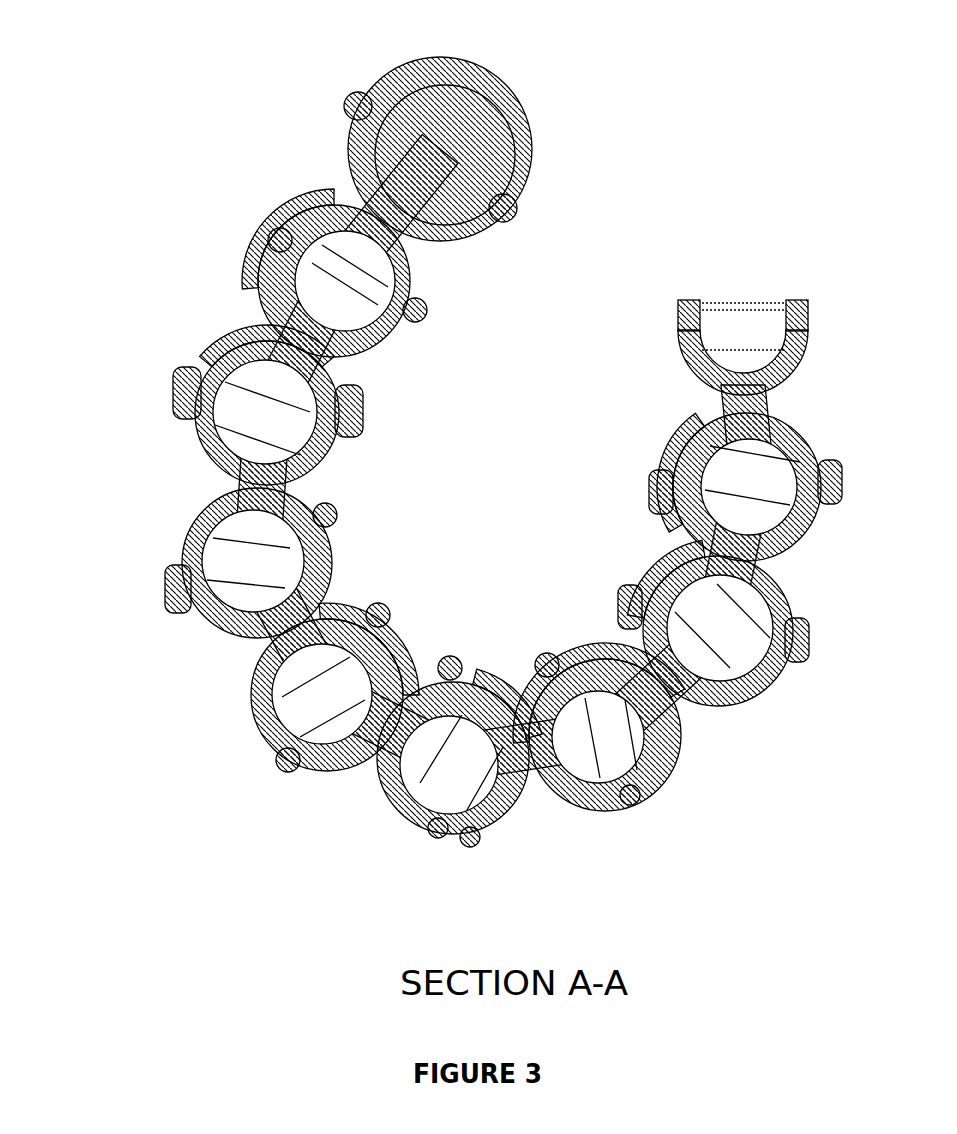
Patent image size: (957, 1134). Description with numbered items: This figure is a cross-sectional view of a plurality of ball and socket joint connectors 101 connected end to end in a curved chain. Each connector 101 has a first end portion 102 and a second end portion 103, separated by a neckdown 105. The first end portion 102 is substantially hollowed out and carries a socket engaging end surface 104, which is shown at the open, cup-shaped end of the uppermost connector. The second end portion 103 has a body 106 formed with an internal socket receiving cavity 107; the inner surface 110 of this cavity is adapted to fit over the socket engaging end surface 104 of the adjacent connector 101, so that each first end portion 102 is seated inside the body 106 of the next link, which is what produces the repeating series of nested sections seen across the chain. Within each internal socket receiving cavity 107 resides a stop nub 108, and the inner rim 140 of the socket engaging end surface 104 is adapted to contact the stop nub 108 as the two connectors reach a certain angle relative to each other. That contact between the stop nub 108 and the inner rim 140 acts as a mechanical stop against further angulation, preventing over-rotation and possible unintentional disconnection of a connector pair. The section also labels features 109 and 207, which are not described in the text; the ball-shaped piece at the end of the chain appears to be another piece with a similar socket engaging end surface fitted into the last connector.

The ball and socket joint connector 101 is at (663, 453).
The first end portion 102 is at (695, 300).
The second end portion 103 is at (663, 517).
The socket engaging end surface 104 is at (677, 358).
The neckdown 105 is at (703, 407).
The body 106 is at (683, 433).
The internal socket receiving cavity 107 is at (298, 300).
The stop nub 108 is at (303, 300).
The cup inner wall 109 is at (662, 312).
The inner surface 110 is at (338, 326).
The inner rim 140 is at (210, 588).
The ball end 207 is at (476, 66).